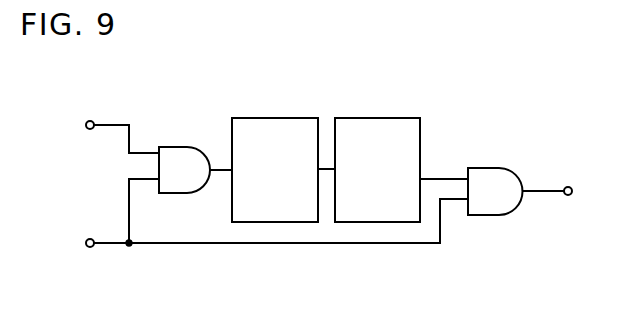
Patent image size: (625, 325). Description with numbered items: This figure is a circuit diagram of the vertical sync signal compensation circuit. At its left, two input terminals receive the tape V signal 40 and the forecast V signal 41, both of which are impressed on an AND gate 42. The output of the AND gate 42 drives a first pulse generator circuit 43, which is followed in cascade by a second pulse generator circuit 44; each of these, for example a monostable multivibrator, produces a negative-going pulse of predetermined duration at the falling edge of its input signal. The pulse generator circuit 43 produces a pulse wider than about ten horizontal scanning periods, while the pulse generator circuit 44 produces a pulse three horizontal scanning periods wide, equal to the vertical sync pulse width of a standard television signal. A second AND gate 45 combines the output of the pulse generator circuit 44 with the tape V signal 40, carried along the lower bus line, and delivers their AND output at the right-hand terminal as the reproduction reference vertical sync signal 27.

The reproduction reference vertical sync signal 27 is at (543, 194).
The tape V signal 40 is at (113, 246).
The forecast V signal 41 is at (115, 123).
The AND gate 42 is at (181, 146).
The pulse generator circuit 43 is at (278, 117).
The pulse generator circuit 44 is at (383, 117).
The AND gate 45 is at (493, 167).